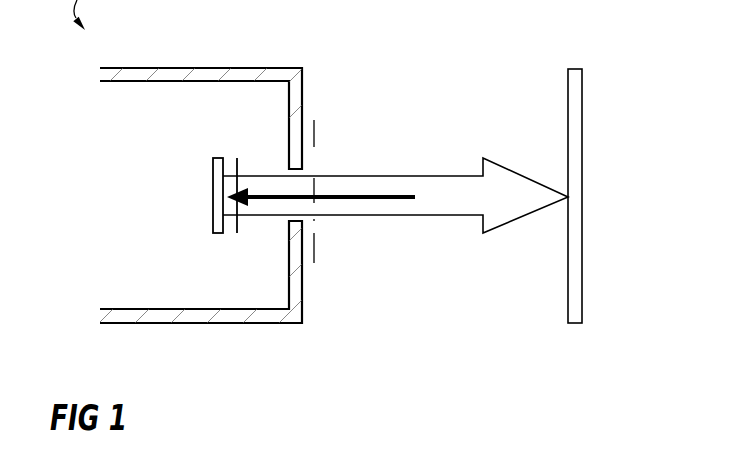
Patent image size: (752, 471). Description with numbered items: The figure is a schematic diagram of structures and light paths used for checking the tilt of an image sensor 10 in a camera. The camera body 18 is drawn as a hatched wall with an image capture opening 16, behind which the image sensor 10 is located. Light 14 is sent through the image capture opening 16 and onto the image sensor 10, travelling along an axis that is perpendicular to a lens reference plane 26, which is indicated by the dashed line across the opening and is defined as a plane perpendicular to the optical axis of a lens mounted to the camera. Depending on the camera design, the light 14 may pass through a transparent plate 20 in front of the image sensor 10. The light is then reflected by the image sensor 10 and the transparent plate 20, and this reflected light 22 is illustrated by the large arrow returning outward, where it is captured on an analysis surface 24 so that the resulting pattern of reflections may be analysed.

The image sensor 10 is at (215, 232).
The light 14 is at (393, 200).
The image capture opening 16 is at (301, 169).
The camera body 18 is at (238, 78).
The transparent plate 20 is at (237, 157).
The reflected light 22 is at (468, 208).
The analysis surface 24 is at (582, 108).
The lens reference plane 26 is at (313, 252).